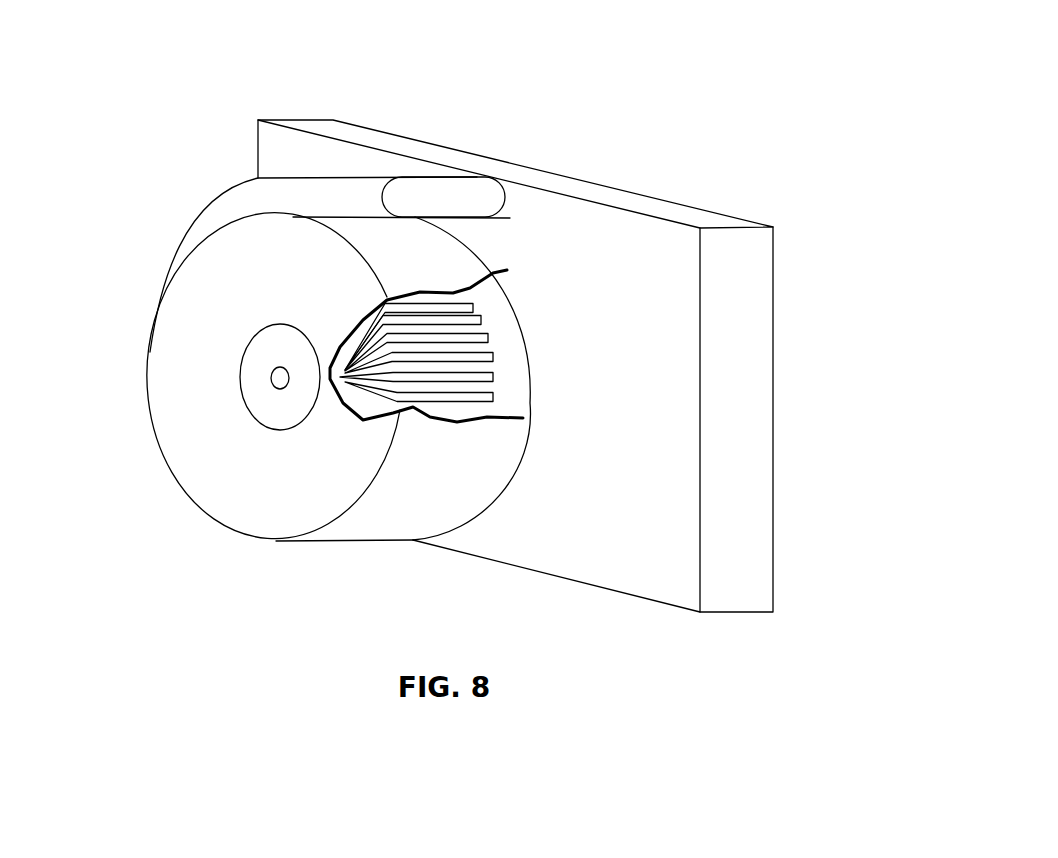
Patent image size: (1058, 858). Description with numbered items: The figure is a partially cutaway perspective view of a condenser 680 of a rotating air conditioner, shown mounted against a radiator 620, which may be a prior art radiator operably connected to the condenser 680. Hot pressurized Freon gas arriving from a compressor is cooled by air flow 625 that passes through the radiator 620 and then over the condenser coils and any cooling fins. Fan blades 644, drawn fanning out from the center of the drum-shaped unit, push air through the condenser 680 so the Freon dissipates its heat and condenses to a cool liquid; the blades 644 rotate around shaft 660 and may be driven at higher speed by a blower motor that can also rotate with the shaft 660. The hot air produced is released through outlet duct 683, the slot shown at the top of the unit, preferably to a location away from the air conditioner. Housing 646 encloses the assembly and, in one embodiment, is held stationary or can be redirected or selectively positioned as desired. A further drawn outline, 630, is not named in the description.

The condenser 680 is at (150, 84).
The air flow 625 is at (675, 138).
The radiator 620 is at (735, 226).
The housing 630 is at (165, 295).
The housing 646 is at (382, 528).
The outlet duct 683 is at (490, 203).
The shaft 660 is at (271, 377).
The fan blades 644 is at (495, 357).